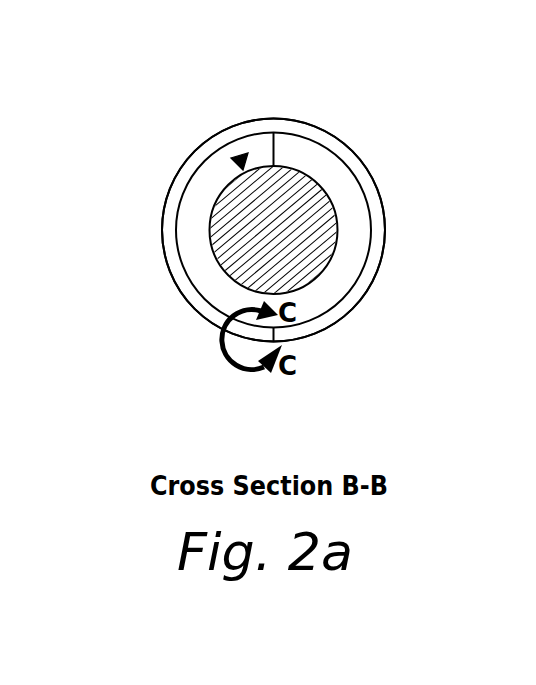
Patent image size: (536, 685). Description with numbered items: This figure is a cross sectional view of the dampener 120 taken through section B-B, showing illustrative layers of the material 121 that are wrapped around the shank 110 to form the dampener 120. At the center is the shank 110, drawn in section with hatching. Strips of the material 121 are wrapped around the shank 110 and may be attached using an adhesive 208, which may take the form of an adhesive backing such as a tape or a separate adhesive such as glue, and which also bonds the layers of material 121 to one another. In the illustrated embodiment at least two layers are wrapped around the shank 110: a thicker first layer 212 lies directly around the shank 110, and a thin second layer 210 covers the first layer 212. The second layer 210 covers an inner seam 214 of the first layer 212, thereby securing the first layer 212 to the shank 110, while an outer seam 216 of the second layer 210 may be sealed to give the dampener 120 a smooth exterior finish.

The shank 110 is at (225, 235).
The dampener 120 is at (336, 212).
The material 121 is at (380, 183).
The adhesive 208 is at (238, 156).
The second layer 210 is at (373, 253).
The first layer 212 is at (357, 208).
The inner seam 214 is at (275, 151).
The outer seam 216 is at (282, 340).